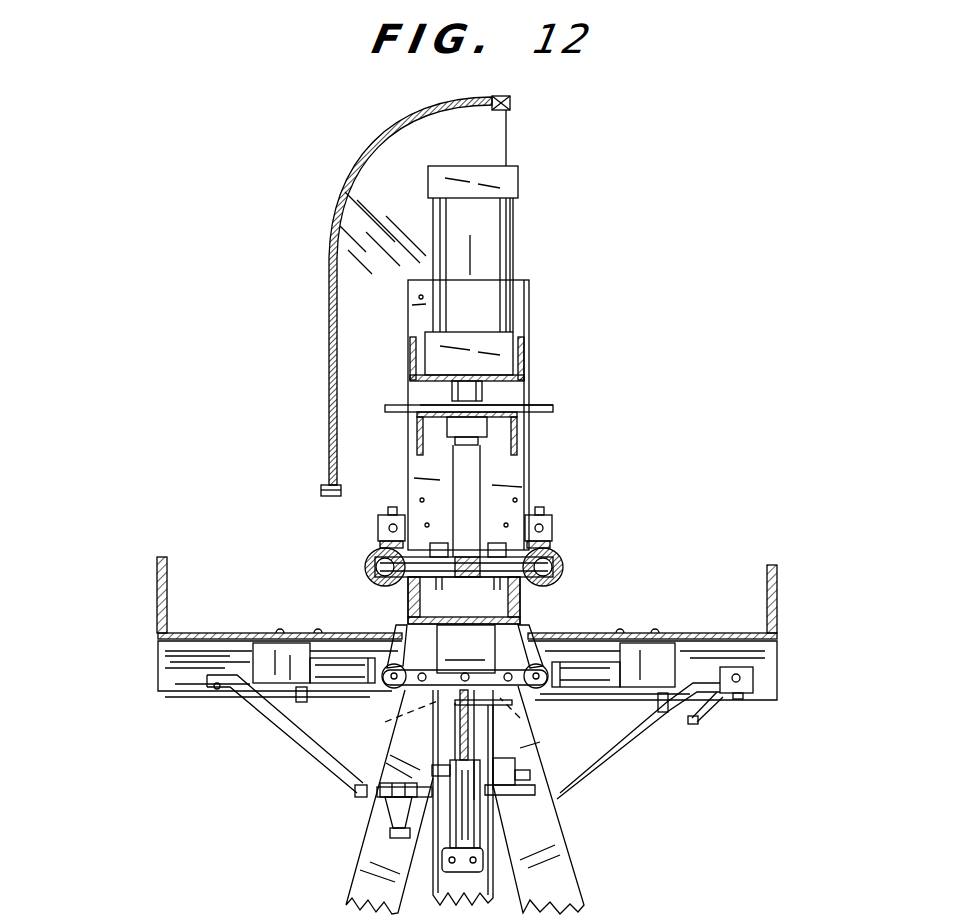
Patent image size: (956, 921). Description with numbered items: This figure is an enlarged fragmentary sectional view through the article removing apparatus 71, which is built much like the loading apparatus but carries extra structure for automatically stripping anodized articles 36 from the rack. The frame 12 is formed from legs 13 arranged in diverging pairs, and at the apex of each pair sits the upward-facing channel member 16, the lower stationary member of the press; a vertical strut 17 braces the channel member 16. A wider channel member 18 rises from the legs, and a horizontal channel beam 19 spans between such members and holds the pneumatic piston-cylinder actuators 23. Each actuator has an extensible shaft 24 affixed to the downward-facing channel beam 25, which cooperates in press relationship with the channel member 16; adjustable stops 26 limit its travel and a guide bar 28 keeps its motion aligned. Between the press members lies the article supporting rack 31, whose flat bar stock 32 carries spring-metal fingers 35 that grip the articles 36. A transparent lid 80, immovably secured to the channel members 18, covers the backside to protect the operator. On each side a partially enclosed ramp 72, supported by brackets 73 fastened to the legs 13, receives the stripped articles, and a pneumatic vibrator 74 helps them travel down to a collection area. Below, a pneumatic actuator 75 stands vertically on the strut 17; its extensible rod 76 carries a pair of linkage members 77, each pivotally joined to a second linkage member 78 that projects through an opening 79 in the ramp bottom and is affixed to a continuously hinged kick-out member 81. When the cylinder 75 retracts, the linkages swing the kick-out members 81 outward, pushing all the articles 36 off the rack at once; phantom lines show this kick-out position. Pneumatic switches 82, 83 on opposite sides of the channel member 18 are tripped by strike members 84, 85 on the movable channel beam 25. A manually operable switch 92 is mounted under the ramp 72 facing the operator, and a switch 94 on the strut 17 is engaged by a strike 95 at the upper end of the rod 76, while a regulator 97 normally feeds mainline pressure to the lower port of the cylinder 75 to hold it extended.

The frame 12 is at (344, 898).
The legs 13 is at (355, 875).
The channel member 16 is at (466, 649).
The vertical strut 17 is at (446, 803).
The channel member 18 is at (530, 307).
The channel beam 19 is at (520, 358).
The pneumatic piston-cylinder actuators 23 is at (497, 243).
The extensible shaft 24 is at (485, 396).
The channel beam 25 is at (518, 450).
The adjustable stops 26 is at (440, 543).
The guide bar 28 is at (481, 474).
The article supporting rack 31 is at (465, 555).
The flat bar stock 32 is at (469, 586).
The fingers 35 is at (464, 600).
The articles 36 is at (365, 563).
The apparatus for removing articles 71 is at (624, 250).
The longitudinal ramp 72 is at (157, 587).
The brackets 73 is at (305, 746).
The pneumatic vibrator 74 is at (253, 658).
The pneumatic actuator 75 is at (470, 820).
The extensible rod 76 is at (458, 743).
The linkage members 77 is at (394, 690).
The second linkage member 78 is at (388, 684).
The opening 79 is at (400, 633).
The transparent lid 80 is at (329, 258).
The kick-out member 81 is at (405, 587).
The pneumatic switch 82 is at (378, 530).
The pneumatic switch 83 is at (553, 522).
The strike member 84 is at (390, 405).
The strike member 85 is at (553, 408).
The pneumatic switch 92 is at (752, 694).
The pneumatic switch 94 is at (510, 766).
The strike 95 is at (506, 770).
The regulator 97 is at (400, 814).